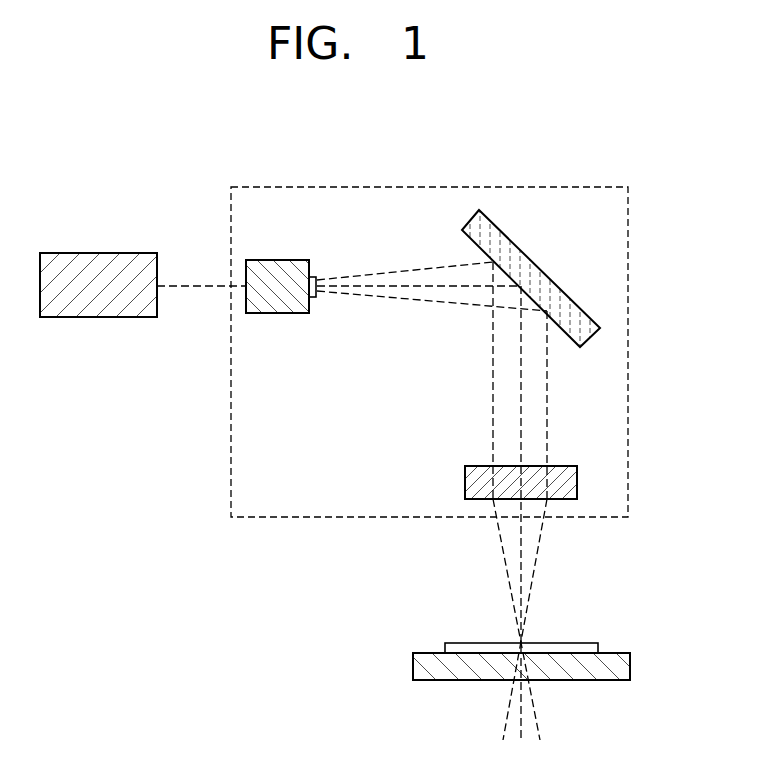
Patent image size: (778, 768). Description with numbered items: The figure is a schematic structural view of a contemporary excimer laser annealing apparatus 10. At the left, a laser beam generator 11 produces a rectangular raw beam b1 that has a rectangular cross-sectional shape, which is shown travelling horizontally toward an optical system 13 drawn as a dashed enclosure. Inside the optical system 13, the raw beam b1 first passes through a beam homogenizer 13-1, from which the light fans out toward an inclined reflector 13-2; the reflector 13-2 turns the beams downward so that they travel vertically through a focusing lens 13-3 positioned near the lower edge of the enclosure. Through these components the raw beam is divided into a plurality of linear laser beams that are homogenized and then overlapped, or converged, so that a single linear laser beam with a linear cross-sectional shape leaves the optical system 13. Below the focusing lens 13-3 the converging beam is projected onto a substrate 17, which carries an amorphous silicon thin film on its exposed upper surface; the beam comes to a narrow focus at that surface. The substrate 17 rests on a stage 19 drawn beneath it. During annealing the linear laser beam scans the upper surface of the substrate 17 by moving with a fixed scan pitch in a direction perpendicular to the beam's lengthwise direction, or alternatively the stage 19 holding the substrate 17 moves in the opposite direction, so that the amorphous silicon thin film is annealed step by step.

The excimer laser annealing apparatus 10 is at (108, 165).
The laser beam generator 11 is at (98, 317).
The rectangular raw beam b1 is at (203, 270).
The optical system 13 is at (428, 187).
The beam homogenizer 13-1 is at (278, 313).
The reflector 13-2 is at (540, 270).
The focusing lens 13-3 is at (465, 482).
The substrate 17 is at (598, 649).
The stage 19 is at (624, 665).